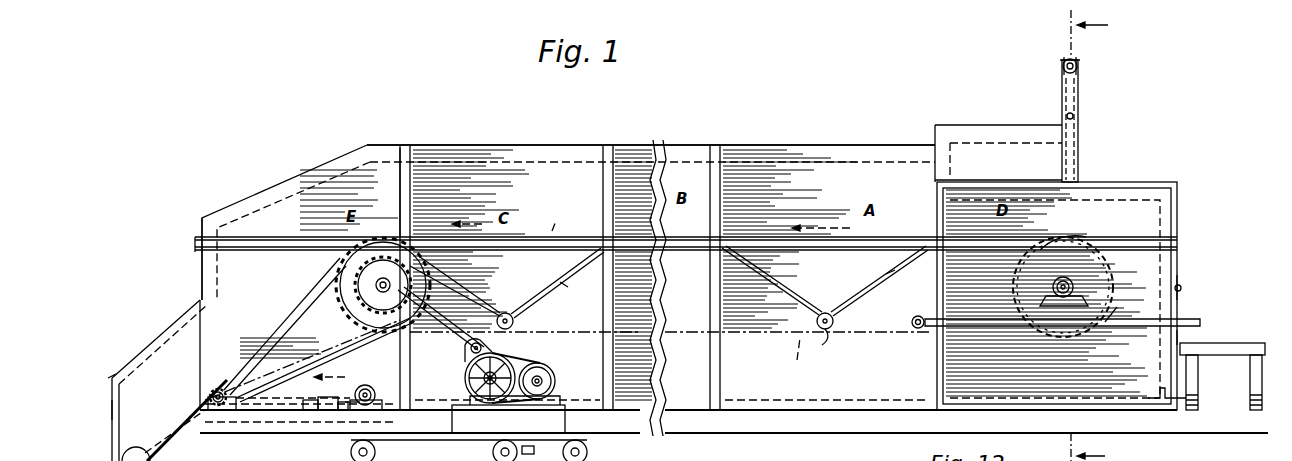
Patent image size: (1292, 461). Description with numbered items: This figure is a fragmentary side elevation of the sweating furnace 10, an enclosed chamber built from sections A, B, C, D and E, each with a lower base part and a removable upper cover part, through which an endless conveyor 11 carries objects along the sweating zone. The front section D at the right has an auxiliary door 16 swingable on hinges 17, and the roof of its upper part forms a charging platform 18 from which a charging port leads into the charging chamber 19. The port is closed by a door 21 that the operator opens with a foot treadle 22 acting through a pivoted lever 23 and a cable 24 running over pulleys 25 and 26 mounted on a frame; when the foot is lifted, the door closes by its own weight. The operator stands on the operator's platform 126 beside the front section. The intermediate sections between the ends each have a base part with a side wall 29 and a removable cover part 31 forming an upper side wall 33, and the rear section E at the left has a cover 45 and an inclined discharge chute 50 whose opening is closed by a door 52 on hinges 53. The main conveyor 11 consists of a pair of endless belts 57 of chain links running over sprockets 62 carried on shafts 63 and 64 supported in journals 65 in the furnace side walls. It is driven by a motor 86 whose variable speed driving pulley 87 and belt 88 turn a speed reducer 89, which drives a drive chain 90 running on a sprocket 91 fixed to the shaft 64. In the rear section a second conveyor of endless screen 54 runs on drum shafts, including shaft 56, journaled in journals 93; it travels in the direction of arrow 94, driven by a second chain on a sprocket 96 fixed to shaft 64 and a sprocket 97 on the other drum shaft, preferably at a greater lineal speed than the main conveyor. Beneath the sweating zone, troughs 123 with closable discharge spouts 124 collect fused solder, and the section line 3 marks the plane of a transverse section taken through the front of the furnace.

The furnace 10 is at (712, 135).
The endless conveyor 11 is at (550, 230).
The auxiliary door 16 is at (1180, 337).
The hinges 17 is at (1181, 288).
The charging platform 18 is at (1128, 182).
The charging chamber 19 is at (987, 156).
The door 21 is at (1080, 152).
The treadle 22 is at (1199, 318).
The pivoted lever 23 is at (1117, 307).
The cable 24 is at (398, 445).
The pulley 25 is at (588, 452).
The pulley 26 is at (492, 453).
The side wall 29 is at (507, 283).
The removable cover part 31 is at (545, 192).
The upper side wall 33 is at (506, 152).
The cover 45 is at (253, 252).
The inclined discharge chute 50 is at (169, 380).
The door 52 is at (115, 408).
The hinges 53 is at (117, 375).
The endless screen 54 is at (258, 383).
The drum shaft 56 is at (371, 387).
The endless belts 57 is at (150, 454).
The sprockets 62 is at (346, 301).
The shaft 63 is at (1082, 279).
The shaft 64 is at (360, 314).
The journals 65 is at (1087, 291).
The motor 86 is at (550, 377).
The variable speed driving pulley 87 is at (540, 370).
The belt 88 is at (486, 358).
The speed reducer 89 is at (472, 358).
The drive chain 90 is at (466, 350).
The sprocket 91 is at (340, 283).
The journals 93 is at (345, 404).
The arrow 94 is at (363, 383).
The sprocket 96 is at (340, 264).
The sprocket 97 is at (212, 386).
The troughs 123 is at (555, 286).
The closable discharge spouts 124 is at (524, 318).
The operator's platform 126 is at (1214, 353).
The section line 3- 3 is at (1076, 235).